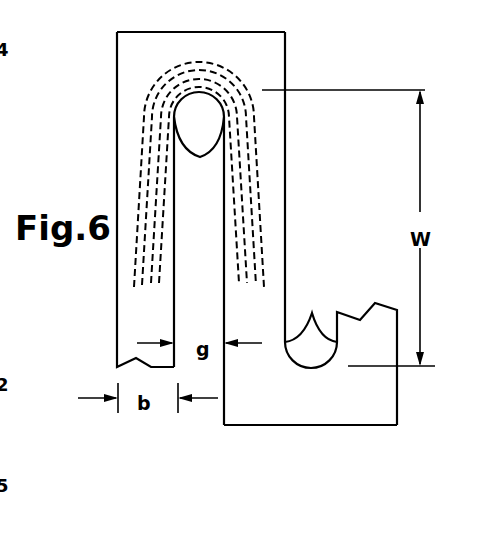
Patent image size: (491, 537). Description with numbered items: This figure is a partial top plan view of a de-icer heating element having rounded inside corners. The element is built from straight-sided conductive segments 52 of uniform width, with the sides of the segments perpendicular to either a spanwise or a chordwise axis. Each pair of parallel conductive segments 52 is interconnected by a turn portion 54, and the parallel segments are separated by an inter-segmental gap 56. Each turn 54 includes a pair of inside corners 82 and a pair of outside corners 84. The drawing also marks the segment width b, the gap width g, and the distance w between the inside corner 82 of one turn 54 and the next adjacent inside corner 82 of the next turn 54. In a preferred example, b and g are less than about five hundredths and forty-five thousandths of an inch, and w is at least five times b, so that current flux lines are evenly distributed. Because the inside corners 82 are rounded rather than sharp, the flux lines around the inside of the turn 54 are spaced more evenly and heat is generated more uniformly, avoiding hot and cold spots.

The conductive segment 52 is at (128, 270).
The turn portion 54 is at (183, 48).
The inter-segmental gap 56 is at (214, 245).
The inside corner 82 is at (255, 229).
The outside corner 84 is at (116, 31).